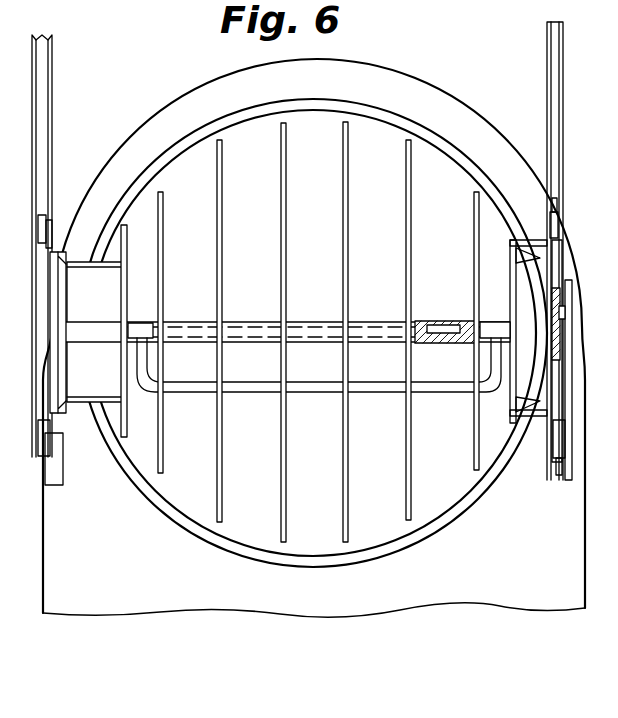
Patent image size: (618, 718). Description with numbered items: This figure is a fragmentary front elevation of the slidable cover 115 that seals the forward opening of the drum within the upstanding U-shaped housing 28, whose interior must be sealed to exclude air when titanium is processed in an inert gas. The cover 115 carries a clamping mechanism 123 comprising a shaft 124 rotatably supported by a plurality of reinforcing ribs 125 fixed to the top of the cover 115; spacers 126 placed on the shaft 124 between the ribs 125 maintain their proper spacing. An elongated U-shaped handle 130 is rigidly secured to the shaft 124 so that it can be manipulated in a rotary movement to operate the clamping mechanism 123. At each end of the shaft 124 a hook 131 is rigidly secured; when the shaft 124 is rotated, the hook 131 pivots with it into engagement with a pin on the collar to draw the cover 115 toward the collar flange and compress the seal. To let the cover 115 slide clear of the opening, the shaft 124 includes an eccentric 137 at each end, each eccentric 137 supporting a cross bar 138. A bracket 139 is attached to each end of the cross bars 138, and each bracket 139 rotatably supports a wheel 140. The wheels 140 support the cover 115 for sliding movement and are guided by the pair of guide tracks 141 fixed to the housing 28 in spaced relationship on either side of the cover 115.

The housing 28 is at (485, 600).
The cover 115 is at (440, 176).
The clamping mechanism 123 is at (453, 394).
The shaft 124 is at (450, 327).
The reinforcing ribs 125 is at (280, 190).
The spacers 126 is at (300, 323).
The U-shaped handle 130 is at (360, 393).
The hook 131 is at (58, 344).
The eccentric 137 is at (559, 319).
The cross bar 138 is at (44, 302).
The bracket 139 is at (50, 229).
The wheel 140 is at (42, 217).
The guide tracks 141 is at (41, 59).